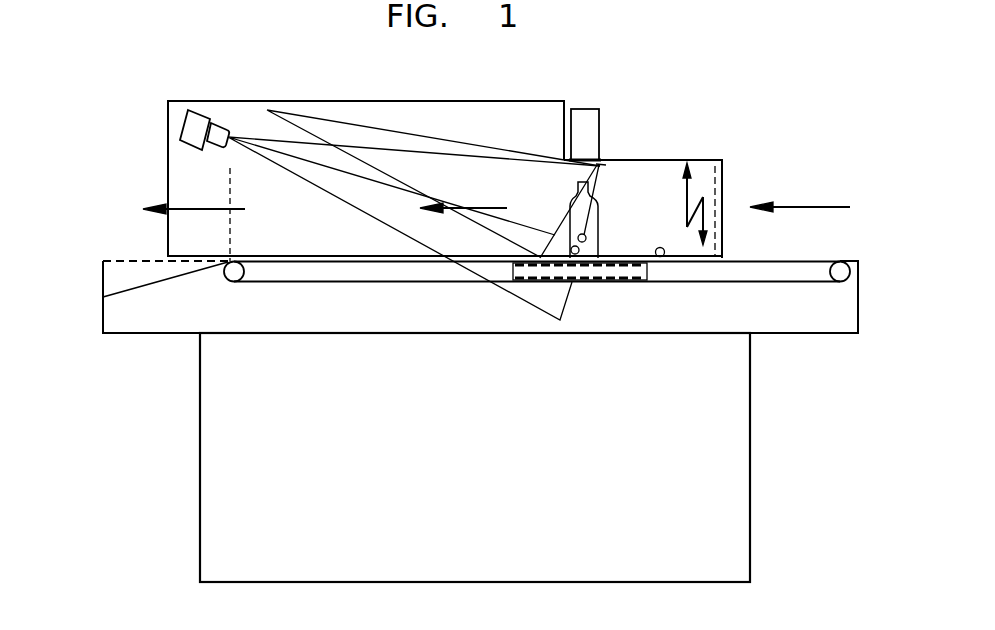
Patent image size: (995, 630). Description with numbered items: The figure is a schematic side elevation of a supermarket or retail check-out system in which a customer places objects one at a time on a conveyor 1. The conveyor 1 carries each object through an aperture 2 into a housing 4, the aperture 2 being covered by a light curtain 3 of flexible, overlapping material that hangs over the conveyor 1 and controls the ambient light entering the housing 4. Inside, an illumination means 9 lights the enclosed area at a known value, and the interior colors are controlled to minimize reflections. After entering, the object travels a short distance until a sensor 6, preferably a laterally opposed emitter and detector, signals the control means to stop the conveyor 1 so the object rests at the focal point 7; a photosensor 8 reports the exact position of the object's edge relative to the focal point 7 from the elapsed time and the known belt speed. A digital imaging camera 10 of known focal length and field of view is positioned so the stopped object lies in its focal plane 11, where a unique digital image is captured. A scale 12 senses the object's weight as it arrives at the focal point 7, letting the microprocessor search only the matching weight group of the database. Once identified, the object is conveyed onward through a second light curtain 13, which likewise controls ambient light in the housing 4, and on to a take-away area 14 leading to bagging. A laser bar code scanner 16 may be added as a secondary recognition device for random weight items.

The conveyor 1 is at (822, 260).
The aperture 2 is at (692, 178).
The light curtain 3 is at (722, 176).
The housing 4 is at (462, 101).
The sensor 6 is at (660, 247).
The focal point 7 is at (586, 238).
The photosensor 8 is at (571, 250).
The illumination means 9 is at (327, 120).
The digital imaging camera 10 is at (222, 120).
The focal plane 11 is at (602, 166).
The scale 12 is at (590, 268).
The second light curtain 13 is at (230, 182).
The take-away area 14 is at (120, 261).
The laser bar code scanner 16 is at (600, 118).